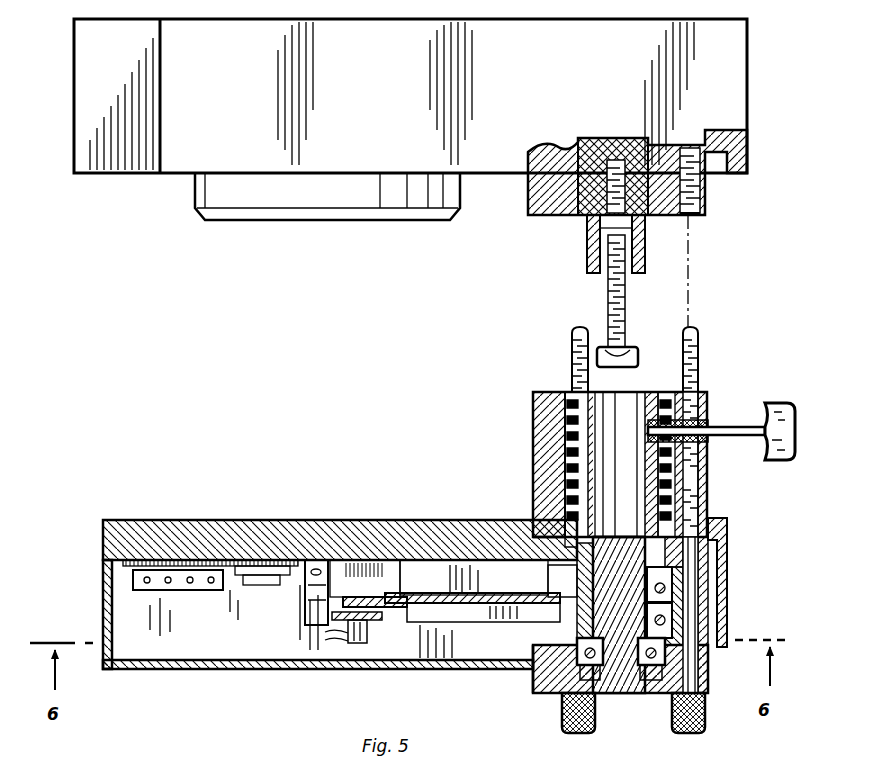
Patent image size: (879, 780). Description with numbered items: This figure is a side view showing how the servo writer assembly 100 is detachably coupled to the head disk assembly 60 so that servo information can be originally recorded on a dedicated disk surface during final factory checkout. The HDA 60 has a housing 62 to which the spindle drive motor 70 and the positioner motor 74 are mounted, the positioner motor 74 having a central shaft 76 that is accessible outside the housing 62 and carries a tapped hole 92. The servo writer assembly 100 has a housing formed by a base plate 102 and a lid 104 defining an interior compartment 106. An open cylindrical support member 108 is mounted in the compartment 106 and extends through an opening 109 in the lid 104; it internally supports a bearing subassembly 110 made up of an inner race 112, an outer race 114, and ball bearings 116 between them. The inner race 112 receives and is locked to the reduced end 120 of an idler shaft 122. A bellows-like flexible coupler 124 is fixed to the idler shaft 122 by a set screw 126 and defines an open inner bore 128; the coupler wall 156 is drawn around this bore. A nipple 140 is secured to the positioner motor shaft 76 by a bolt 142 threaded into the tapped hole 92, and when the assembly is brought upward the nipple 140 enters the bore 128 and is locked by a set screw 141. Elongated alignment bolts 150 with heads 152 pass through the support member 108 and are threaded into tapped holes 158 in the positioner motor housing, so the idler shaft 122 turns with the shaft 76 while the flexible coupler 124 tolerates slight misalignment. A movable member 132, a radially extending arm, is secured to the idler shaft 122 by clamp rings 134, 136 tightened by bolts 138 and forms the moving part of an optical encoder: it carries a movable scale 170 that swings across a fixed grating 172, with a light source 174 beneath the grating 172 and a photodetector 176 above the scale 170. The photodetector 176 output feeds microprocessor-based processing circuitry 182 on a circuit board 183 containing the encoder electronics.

The head disk assembly 60 is at (388, 125).
The housing 62 is at (80, 107).
The spindle drive motor 70 is at (248, 222).
The positioner motor 74 is at (622, 230).
The central shaft 76 is at (645, 172).
The tapped hole 92 is at (603, 200).
The tapped holes 158 is at (700, 215).
The nipple 140 is at (590, 255).
The bolt 142 is at (608, 300).
The alignment bolts 150 is at (572, 345).
The set screw 141 is at (722, 420).
The column wall 156 is at (540, 405).
The open inner bore 128 is at (608, 437).
The flexible coupler 124 is at (624, 452).
The set screw 126 is at (545, 517).
The servo writer assembly 100 is at (310, 576).
The base plate 102 is at (307, 520).
The lid 104 is at (262, 670).
The interior compartment 106 is at (234, 617).
The circuit board 183 is at (180, 560).
The processing circuitry 182 is at (133, 578).
The movable scale 170 is at (342, 560).
The photodetector 176 is at (368, 563).
The fixed grating 172 is at (392, 607).
The light source 174 is at (355, 645).
The movable member 132 is at (468, 622).
The cylindrical support member 108 is at (593, 642).
The opening 109 is at (540, 680).
The ball bearings 116 is at (560, 690).
The idler shaft 122 is at (664, 643).
The inner race 112 is at (615, 690).
The reduced end 120 is at (612, 695).
The bearing subassembly 110 is at (700, 690).
The outer race 114 is at (700, 660).
The clamp ring 134 is at (683, 577).
The clamp ring 136 is at (672, 627).
The bolts 138 is at (672, 612).
The heads 152 is at (580, 733).